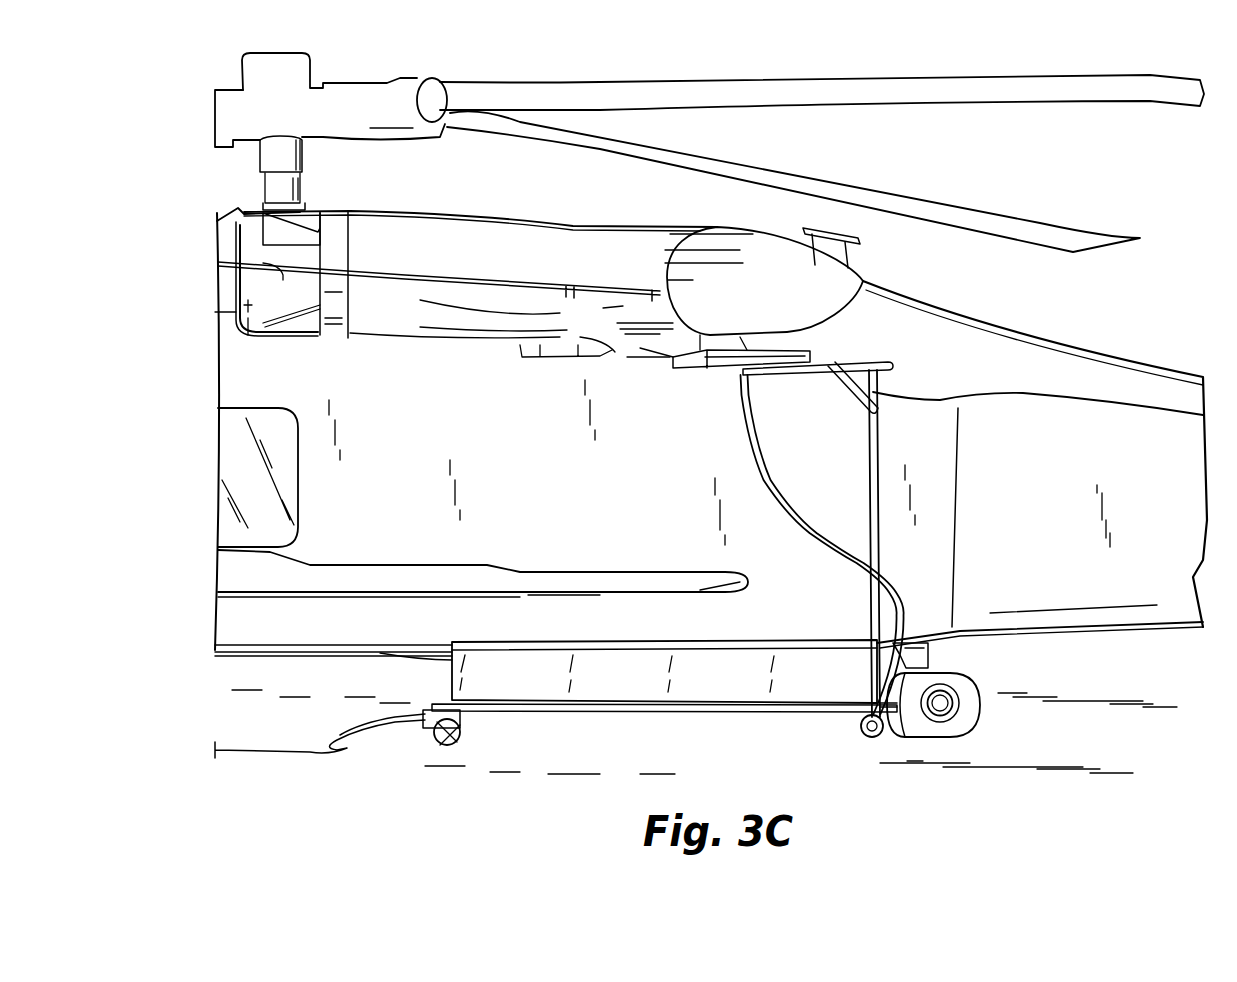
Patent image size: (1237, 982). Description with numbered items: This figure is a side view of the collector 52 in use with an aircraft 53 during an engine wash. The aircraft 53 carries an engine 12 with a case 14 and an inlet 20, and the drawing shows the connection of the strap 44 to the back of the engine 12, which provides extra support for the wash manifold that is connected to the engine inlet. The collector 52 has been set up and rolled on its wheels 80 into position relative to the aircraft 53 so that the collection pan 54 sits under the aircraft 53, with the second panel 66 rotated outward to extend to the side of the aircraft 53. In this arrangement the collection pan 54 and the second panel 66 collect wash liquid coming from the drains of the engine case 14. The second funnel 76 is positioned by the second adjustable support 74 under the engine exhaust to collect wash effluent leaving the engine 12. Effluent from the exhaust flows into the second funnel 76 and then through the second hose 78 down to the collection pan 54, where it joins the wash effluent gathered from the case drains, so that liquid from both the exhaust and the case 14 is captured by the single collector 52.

The engine 12 is at (510, 228).
The case 14 is at (250, 312).
The inlet 20 is at (227, 186).
The strap 44 is at (422, 283).
The collector 52 is at (526, 806).
The aircraft 53 is at (941, 62).
The collection pan 54 is at (882, 765).
The second panel 66 is at (640, 686).
The second support 74 is at (891, 445).
The second funnel 76 is at (690, 365).
The second hose 78 is at (760, 432).
The wheels 80 is at (862, 740).